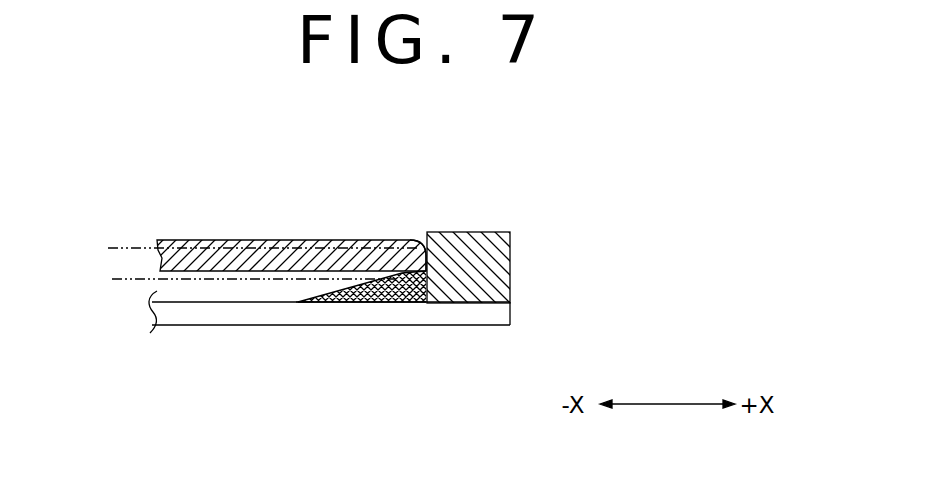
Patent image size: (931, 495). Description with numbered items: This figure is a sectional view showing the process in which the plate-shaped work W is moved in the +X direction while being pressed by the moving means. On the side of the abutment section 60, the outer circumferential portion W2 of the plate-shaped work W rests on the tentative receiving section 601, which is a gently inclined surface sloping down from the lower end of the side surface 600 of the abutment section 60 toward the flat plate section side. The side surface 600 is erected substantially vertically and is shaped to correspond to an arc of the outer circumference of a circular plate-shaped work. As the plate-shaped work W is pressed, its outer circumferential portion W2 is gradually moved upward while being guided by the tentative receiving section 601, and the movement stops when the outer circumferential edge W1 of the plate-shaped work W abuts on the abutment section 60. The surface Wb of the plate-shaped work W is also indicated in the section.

The plate-shaped work W is at (113, 279).
The outer circumferential edge of the plate-shaped work W1 is at (428, 258).
The outer circumferential portion of the plate-shaped work W2 is at (398, 303).
The bottom surface of wafer Wb is at (298, 302).
The abutment section 60 is at (490, 267).
The side surface of the abutment section 600 is at (420, 239).
The tentative receiving section 601 is at (350, 290).